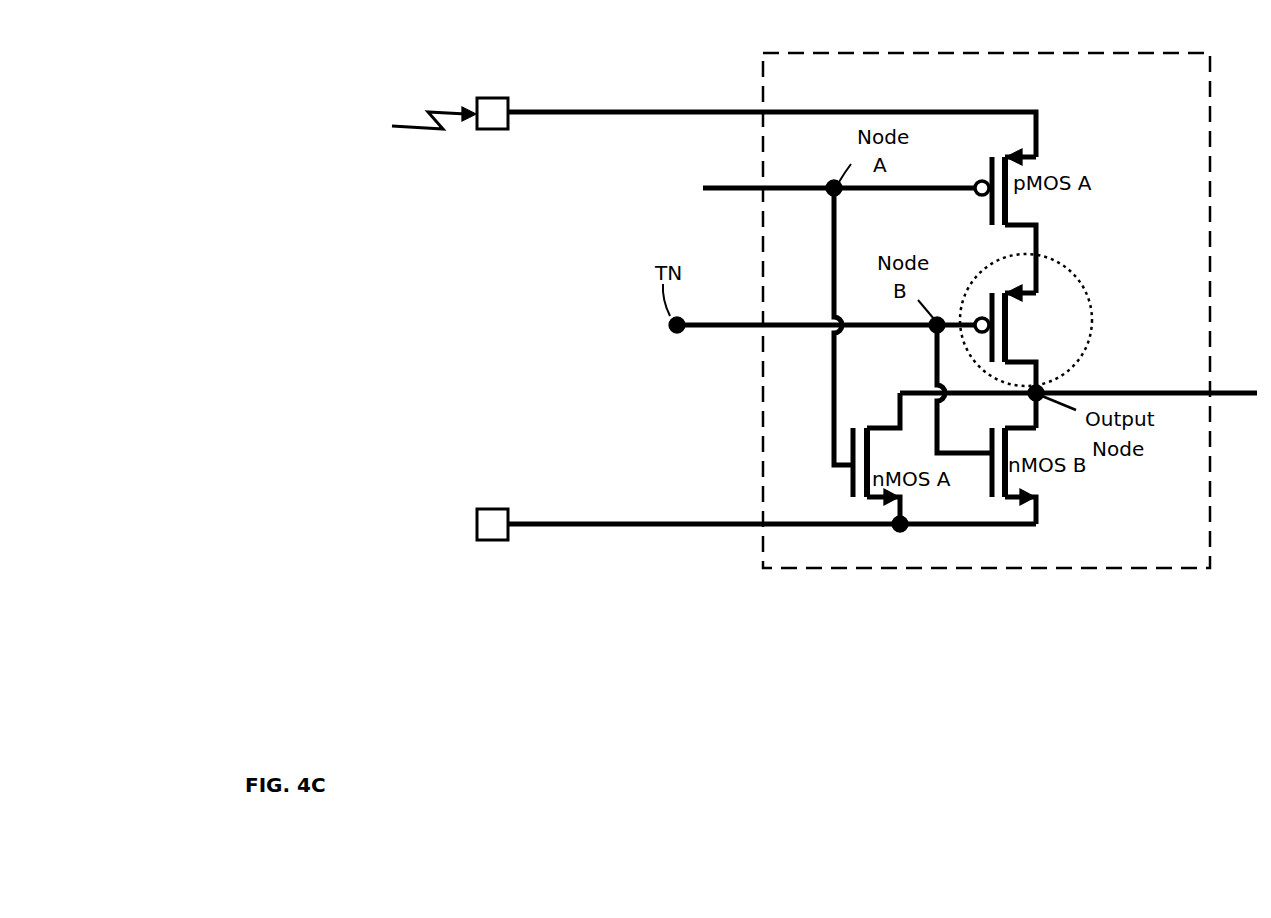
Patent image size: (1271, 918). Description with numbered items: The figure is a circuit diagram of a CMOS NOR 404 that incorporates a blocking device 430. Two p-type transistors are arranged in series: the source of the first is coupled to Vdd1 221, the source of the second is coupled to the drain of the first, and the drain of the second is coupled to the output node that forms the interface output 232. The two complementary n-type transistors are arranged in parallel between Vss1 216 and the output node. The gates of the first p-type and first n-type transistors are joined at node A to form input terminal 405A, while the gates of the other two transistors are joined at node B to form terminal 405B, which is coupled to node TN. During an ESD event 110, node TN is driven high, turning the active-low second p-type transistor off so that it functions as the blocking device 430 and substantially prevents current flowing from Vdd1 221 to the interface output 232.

The ESD event 110 is at (403, 114).
The Vdd1 221 is at (487, 129).
The Vss1 216 is at (487, 540).
The NOR 404 is at (986, 310).
The input terminal 405A is at (781, 186).
The terminal 405B is at (782, 322).
The blocking device 430 is at (1072, 262).
The interface output 232 is at (1158, 390).